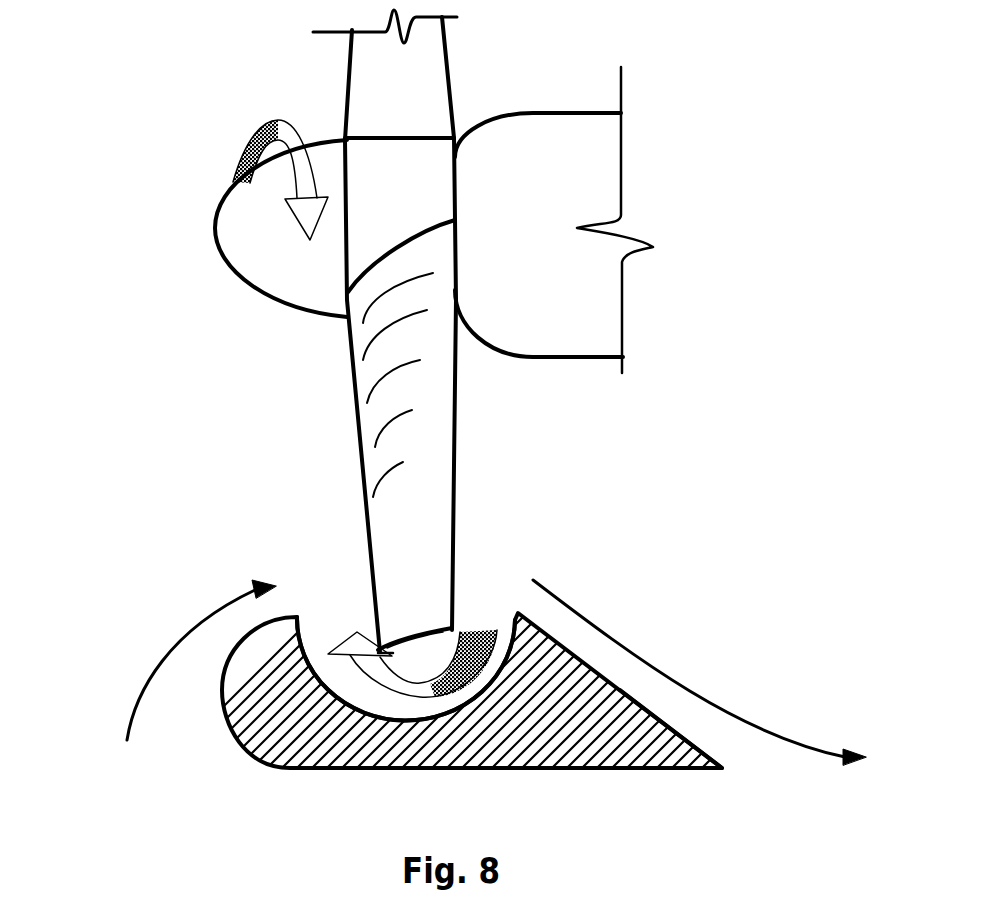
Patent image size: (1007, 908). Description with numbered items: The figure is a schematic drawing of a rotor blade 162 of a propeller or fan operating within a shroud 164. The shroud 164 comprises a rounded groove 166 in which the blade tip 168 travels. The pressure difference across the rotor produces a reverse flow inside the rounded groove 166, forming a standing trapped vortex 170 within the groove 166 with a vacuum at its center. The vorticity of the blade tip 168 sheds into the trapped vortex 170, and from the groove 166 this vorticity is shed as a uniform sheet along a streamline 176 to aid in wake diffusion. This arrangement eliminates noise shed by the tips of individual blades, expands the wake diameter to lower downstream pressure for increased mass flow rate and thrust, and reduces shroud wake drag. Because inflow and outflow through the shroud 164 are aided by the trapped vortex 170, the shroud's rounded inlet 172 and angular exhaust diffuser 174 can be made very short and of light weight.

The rotor blade 162 is at (373, 368).
The shroud 164 is at (258, 757).
The rounded groove 166 is at (485, 608).
The blade tip 168 is at (397, 620).
The trapped vortex 170 is at (357, 633).
The rounded inlet 172 is at (222, 683).
The angular exhaust diffuser 174 is at (720, 755).
The streamline 176 is at (683, 688).